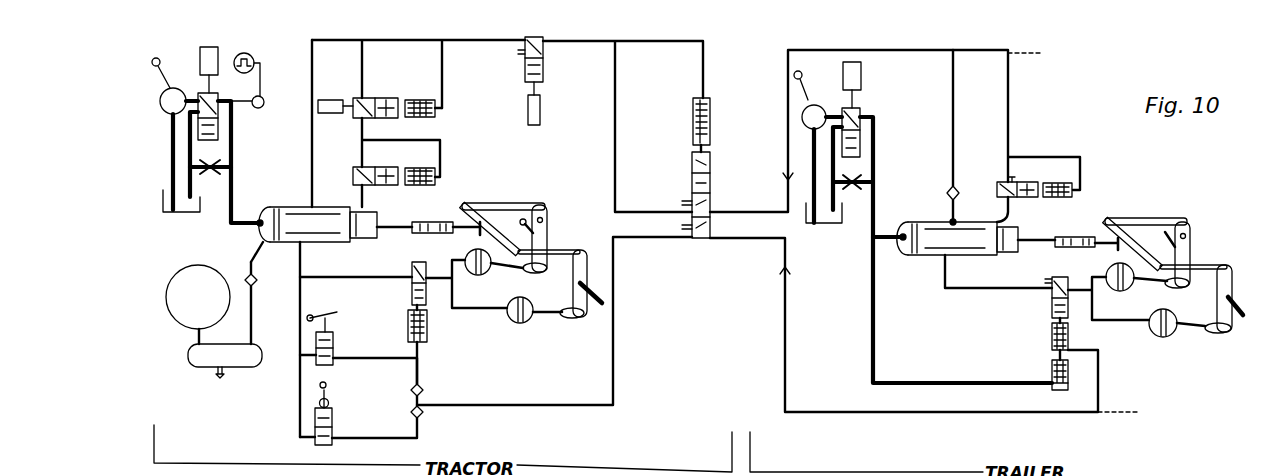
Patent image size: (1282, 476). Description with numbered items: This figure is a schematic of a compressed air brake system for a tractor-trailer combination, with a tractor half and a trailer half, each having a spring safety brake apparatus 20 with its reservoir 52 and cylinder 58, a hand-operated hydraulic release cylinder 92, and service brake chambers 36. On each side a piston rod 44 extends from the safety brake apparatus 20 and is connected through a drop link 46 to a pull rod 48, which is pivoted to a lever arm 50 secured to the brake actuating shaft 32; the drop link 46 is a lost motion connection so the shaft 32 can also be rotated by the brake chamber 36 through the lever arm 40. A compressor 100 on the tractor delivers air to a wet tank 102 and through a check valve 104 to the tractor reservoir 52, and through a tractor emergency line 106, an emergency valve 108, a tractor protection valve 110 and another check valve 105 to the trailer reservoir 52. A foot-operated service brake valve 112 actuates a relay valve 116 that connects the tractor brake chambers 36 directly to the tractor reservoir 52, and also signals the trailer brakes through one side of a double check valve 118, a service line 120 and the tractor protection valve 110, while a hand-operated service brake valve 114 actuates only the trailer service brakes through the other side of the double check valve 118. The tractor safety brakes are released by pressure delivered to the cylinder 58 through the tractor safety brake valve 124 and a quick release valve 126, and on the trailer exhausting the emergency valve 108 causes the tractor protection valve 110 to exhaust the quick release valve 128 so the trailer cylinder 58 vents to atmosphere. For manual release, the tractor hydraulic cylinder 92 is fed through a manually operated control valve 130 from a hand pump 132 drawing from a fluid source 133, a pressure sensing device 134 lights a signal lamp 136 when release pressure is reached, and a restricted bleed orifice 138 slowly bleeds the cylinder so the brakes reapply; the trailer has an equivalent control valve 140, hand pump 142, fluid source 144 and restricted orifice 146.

The safety brake apparatus 20 is at (294, 203).
The brake actuating shaft 32 is at (521, 222).
The compressed air service brake chamber 36 is at (486, 274).
The lever arm 40 is at (587, 306).
The piston rod 44 is at (395, 230).
The drop link 46 is at (433, 222).
The pull rod 48 is at (470, 232).
The lever arm 50 is at (548, 220).
The reservoir 52 is at (930, 255).
The cylinder 58 is at (370, 214).
The hydraulic cylinder 92 is at (256, 215).
The compressor 100 is at (190, 268).
The wet tank 102 is at (257, 356).
The check valve 104 is at (253, 284).
The check valve 105 is at (957, 190).
The tractor emergency line 106 is at (342, 40).
The emergency valve 108 is at (538, 37).
The tractor protection valve 110 is at (692, 170).
The foot-operated service brake valve 112 is at (334, 348).
The hand-operated service brake valve 114 is at (333, 426).
The relay valve 116 is at (411, 288).
The double check valve 118 is at (422, 390).
The service line 120 is at (613, 370).
The tractor safety brake valve 124 is at (386, 118).
The quick release valve 126 is at (386, 167).
The quick release valve 128 is at (1030, 182).
The manually operated control valve 130 is at (218, 100).
The hand-operated hydraulic pump 132 is at (173, 73).
The source of hydraulic fluid 133 is at (183, 214).
The pressure sensing device 134 is at (264, 102).
The signal lamp 136 is at (254, 57).
The restricted bleed orifice 138 is at (210, 174).
The manual control valve 140 is at (858, 114).
The hand pump 142 is at (825, 95).
The source of hydraulic fluid 144 is at (824, 235).
The restricted orifice 146 is at (852, 189).